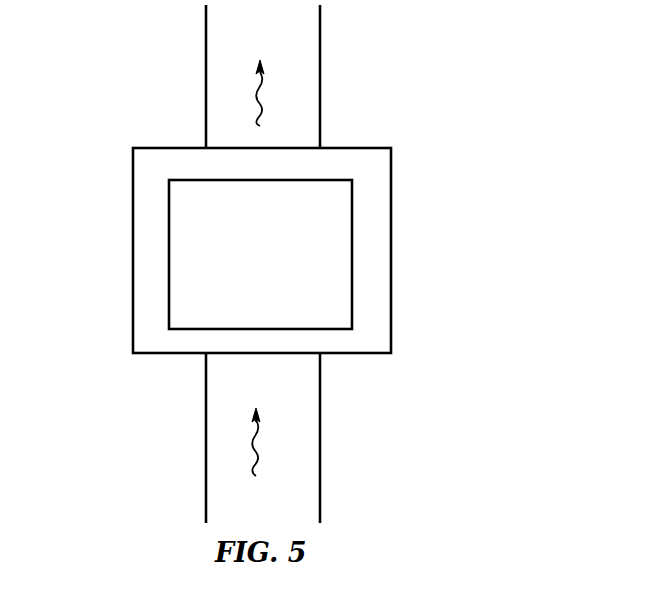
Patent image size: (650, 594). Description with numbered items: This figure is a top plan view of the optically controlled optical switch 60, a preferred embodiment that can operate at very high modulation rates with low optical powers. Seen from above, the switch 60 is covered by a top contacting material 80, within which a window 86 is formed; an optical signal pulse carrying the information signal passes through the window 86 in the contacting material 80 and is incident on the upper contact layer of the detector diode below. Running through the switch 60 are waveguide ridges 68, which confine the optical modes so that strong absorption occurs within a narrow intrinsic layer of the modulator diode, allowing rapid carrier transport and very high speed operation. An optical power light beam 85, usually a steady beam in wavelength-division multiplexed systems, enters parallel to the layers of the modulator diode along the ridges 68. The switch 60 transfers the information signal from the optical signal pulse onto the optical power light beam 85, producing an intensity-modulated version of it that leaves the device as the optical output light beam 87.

The optically controlled optical switch 60 is at (432, 190).
The waveguide ridges 68 is at (307, 120).
The top contacting material 80 is at (392, 284).
The optical power light beam 85 is at (257, 438).
The window 86 is at (175, 265).
The optical output light beam 87 is at (259, 97).